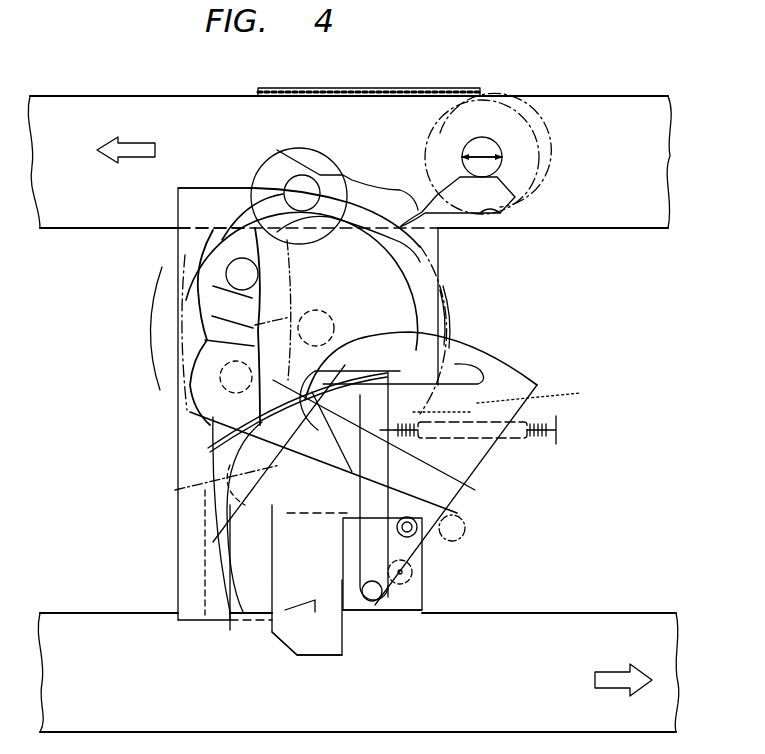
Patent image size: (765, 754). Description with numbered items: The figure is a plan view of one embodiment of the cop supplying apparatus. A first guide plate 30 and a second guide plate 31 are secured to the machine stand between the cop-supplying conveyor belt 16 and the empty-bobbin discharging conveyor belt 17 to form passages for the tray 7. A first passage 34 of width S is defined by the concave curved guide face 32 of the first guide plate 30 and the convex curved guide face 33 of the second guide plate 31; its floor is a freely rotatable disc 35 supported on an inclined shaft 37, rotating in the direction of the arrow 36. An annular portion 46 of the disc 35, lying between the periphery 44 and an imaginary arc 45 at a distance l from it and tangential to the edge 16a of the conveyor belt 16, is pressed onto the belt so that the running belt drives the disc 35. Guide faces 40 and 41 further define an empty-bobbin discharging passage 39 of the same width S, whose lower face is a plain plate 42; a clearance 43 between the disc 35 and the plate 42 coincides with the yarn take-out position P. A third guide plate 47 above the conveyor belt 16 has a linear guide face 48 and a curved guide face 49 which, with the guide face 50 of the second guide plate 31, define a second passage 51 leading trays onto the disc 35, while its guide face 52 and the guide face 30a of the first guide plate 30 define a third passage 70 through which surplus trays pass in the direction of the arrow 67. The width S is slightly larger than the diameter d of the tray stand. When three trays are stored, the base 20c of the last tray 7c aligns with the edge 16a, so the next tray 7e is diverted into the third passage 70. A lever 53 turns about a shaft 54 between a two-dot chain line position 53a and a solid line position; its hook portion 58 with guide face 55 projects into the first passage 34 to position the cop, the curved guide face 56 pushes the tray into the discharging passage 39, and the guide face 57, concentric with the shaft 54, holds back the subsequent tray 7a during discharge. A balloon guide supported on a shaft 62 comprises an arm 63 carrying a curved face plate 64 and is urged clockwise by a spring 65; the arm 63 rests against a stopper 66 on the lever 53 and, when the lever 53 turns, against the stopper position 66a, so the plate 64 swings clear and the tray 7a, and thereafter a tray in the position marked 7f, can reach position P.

The tray 7 is at (542, 136).
The subsequent tray 7a is at (197, 407).
The last tray 7c is at (210, 258).
The next subsequent tray 7e is at (298, 147).
The lever portion 7f is at (250, 501).
The cop-supplying conveyor belt 16 is at (596, 165).
The edge of the conveyor belt 16a is at (208, 226).
The empty-bobbin discharging conveyor belt 17 is at (511, 678).
The base of the last stored tray 20c is at (178, 230).
The first guide plate 30 is at (193, 437).
The guide face of the first guide plate 30a is at (230, 186).
The second guide plate 31 is at (328, 278).
The concave curved guide face 32 is at (198, 285).
The convex curved guide face 33 is at (249, 338).
The first passage 34 is at (236, 309).
The disc 35 is at (511, 396).
The arrow 36 is at (157, 358).
The shaft 37 is at (337, 325).
The empty-bobbin discharging passage 39 is at (248, 582).
The guide face 40 is at (245, 520).
The guide face 41 is at (271, 522).
The plain plate 42 is at (178, 620).
The clearance 43 is at (270, 455).
The periphery of the disc 44 is at (450, 318).
The imaginary arc 45 is at (399, 262).
The annular portion 46 is at (424, 277).
The third guide plate 47 is at (391, 118).
The linear guide face 48 is at (428, 152).
The curved guide face 49 is at (360, 186).
The guide face of the second guide plate 50 is at (493, 213).
The second passage 51 is at (384, 205).
The guide face of the third guide plate 52 is at (262, 144).
The lever 53 is at (453, 470).
The two-dot chain line position 53a is at (243, 612).
The shaft 54 is at (425, 537).
The guide face 55 is at (412, 568).
The curved guide face 56 is at (513, 368).
The guide face 57 is at (488, 348).
The hook portion 58 is at (352, 626).
The shaft 62 is at (385, 622).
The arm 63 is at (440, 490).
The curved face plate 64 is at (298, 395).
The spring 65 is at (533, 433).
The stopper 66 is at (422, 607).
The stopper position 66a is at (467, 537).
The arrow 67 is at (119, 140).
The third passage 70 is at (277, 166).
The diameter of the stand d is at (486, 154).
The distance l is at (430, 297).
The yarn take-out position P is at (219, 483).
The width S is at (252, 355).